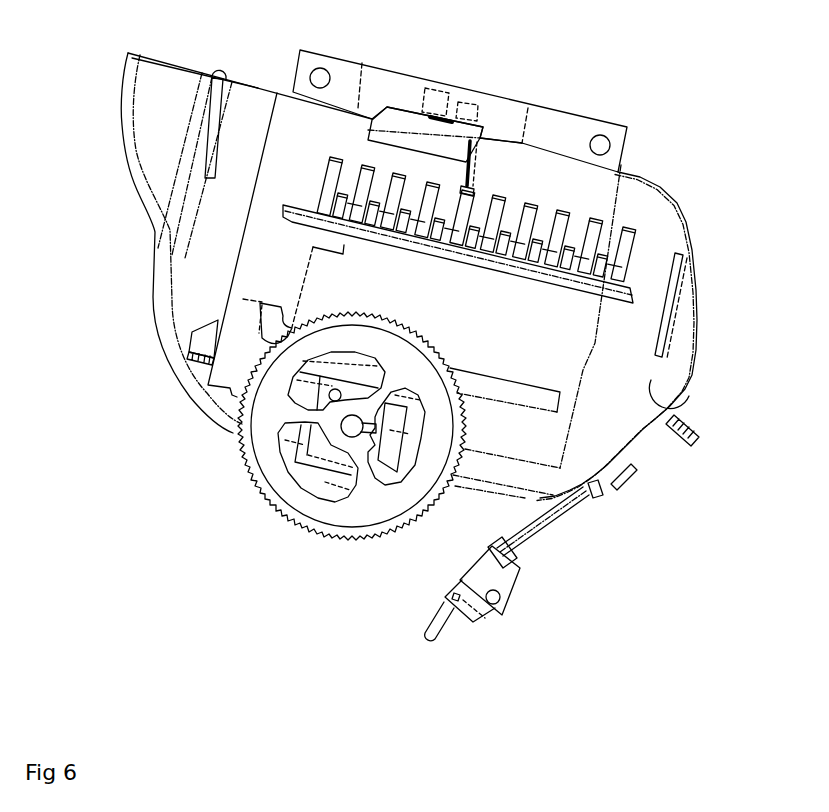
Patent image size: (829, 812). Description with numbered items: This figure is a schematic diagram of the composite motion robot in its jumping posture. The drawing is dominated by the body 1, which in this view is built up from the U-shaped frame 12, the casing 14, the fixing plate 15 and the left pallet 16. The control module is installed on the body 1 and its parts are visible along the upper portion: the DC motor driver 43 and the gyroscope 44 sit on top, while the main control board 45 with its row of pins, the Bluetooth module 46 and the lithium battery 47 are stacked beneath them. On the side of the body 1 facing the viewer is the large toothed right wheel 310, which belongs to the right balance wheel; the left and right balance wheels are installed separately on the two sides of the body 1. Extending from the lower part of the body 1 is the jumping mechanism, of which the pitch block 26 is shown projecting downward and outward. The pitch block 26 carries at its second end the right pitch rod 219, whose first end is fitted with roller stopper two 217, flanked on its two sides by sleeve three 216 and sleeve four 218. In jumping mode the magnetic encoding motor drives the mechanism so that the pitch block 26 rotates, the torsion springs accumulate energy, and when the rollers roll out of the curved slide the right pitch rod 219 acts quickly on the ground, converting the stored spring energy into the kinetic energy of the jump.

The body 1 is at (86, 240).
The U-shaped frame 12 is at (217, 203).
The fixing plate 15 is at (297, 218).
The casing 14 is at (258, 272).
The left pallet 16 is at (273, 327).
The DC motor driver 43 is at (502, 110).
The gyroscope 44 is at (397, 115).
The main control board 45 is at (568, 267).
The Bluetooth module 46 is at (558, 300).
The Lithium battery 47 is at (537, 357).
The right wheel 310 is at (270, 465).
The pitch block 26 is at (600, 480).
The sleeve three 216 is at (468, 608).
The roller stopper two 217 is at (500, 607).
The sleeve four 218 is at (505, 572).
The right pitch rod 219 is at (440, 632).